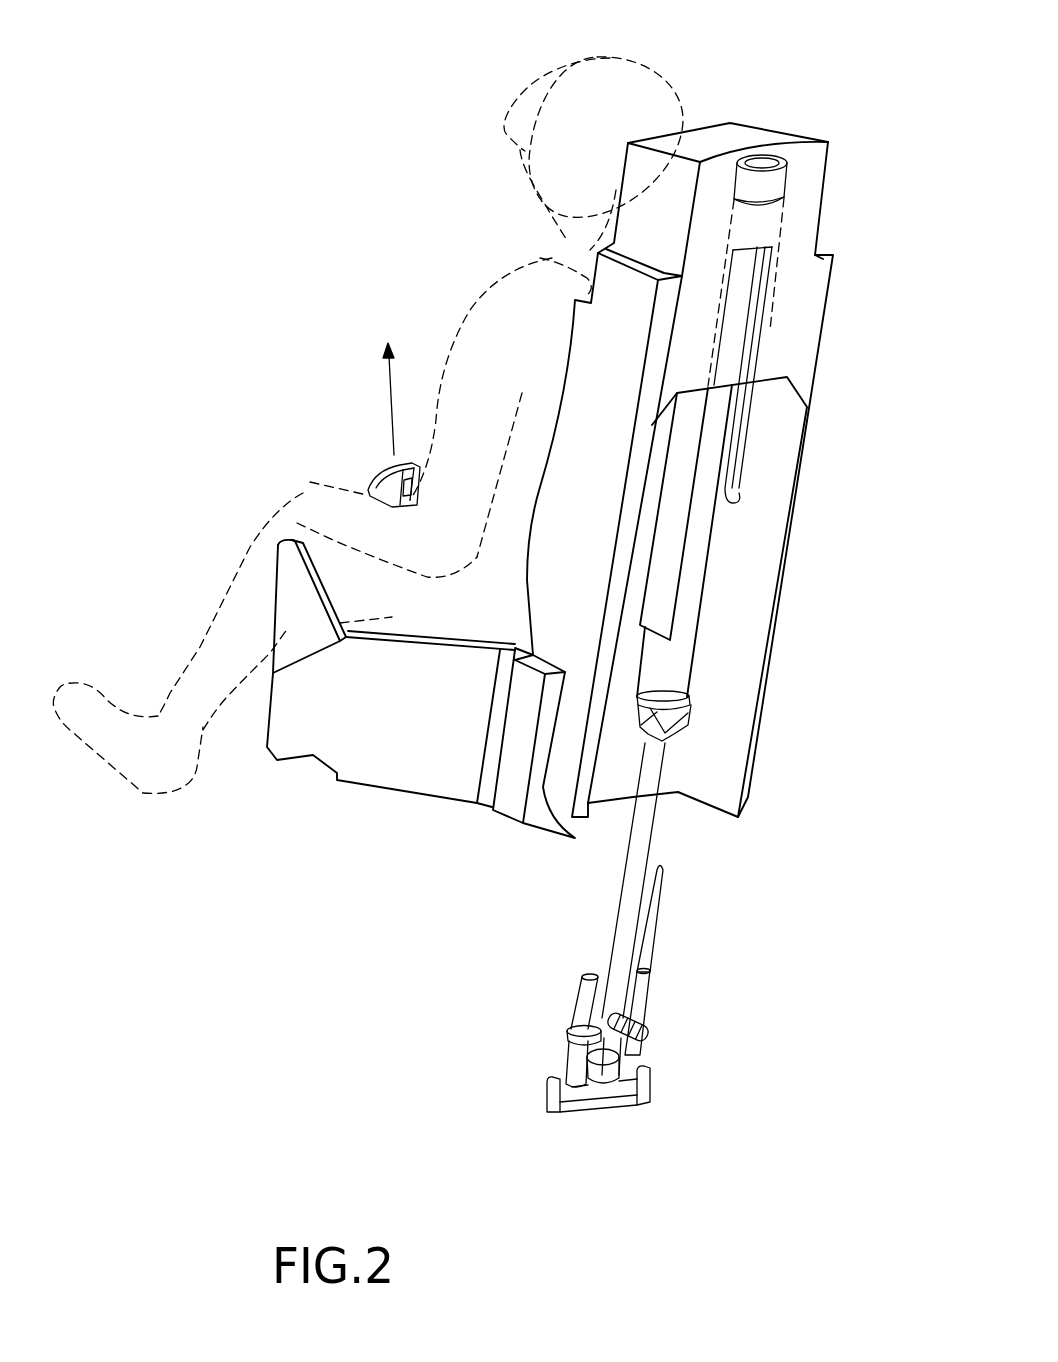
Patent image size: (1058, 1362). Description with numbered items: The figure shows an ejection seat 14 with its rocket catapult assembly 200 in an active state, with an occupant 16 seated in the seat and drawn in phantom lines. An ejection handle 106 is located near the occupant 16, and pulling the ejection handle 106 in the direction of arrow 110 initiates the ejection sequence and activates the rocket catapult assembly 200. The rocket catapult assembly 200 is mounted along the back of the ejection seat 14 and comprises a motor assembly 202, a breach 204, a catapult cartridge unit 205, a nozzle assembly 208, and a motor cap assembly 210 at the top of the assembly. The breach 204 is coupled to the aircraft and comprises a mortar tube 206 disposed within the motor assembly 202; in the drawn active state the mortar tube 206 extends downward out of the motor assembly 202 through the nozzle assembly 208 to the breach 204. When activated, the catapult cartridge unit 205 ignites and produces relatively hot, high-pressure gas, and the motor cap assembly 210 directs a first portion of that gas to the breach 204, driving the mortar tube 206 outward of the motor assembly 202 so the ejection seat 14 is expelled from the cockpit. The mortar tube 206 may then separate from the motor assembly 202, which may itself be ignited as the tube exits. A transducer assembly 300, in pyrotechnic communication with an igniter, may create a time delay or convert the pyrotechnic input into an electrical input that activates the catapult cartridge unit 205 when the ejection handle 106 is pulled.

The occupant 16 is at (684, 76).
The ejection seat 14 is at (790, 110).
The motor cap assembly 210 is at (770, 168).
The motor assembly 202 is at (736, 323).
The rocket catapult assembly 200 is at (828, 422).
The nozzle assembly 208 is at (692, 708).
The mortar tube 206 is at (630, 921).
The transducer assembly 300 is at (637, 1020).
The catapult cartridge unit 205 is at (572, 1029).
The breach 204 is at (607, 1045).
The arrow 110 is at (382, 384).
The ejection handle 106 is at (357, 476).